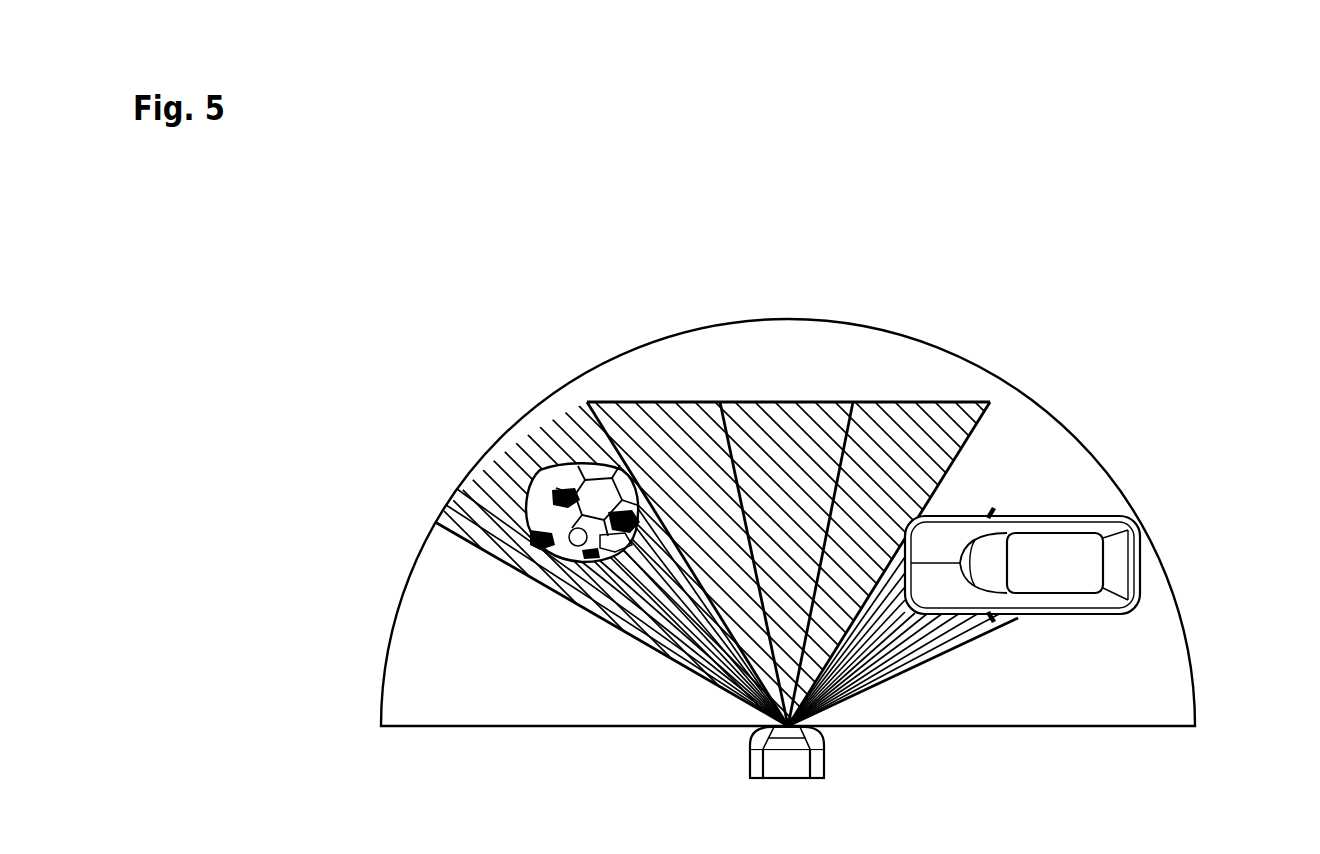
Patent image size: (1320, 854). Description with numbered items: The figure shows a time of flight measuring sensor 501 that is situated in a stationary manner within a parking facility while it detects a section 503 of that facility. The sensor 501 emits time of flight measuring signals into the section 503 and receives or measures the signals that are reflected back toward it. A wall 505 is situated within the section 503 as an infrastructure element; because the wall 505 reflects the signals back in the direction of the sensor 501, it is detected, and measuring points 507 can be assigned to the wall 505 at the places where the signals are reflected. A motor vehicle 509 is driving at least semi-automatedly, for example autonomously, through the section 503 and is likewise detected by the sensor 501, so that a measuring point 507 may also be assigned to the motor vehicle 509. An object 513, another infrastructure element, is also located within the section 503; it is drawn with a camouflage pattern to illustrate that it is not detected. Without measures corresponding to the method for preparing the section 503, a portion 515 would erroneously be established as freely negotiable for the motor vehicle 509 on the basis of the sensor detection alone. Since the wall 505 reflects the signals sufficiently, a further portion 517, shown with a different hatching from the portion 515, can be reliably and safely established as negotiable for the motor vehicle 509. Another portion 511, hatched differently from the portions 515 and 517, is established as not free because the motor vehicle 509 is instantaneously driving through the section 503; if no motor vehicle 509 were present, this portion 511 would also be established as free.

The time of flight measuring sensor 501 is at (824, 764).
The section 503 is at (415, 568).
The wall 505 is at (788, 402).
The measuring points 507 is at (587, 402).
The motor vehicle 509 is at (1140, 535).
The other portion 511 is at (880, 653).
The object 513 is at (550, 492).
The portion 515 is at (650, 630).
The further portion 517 is at (922, 460).